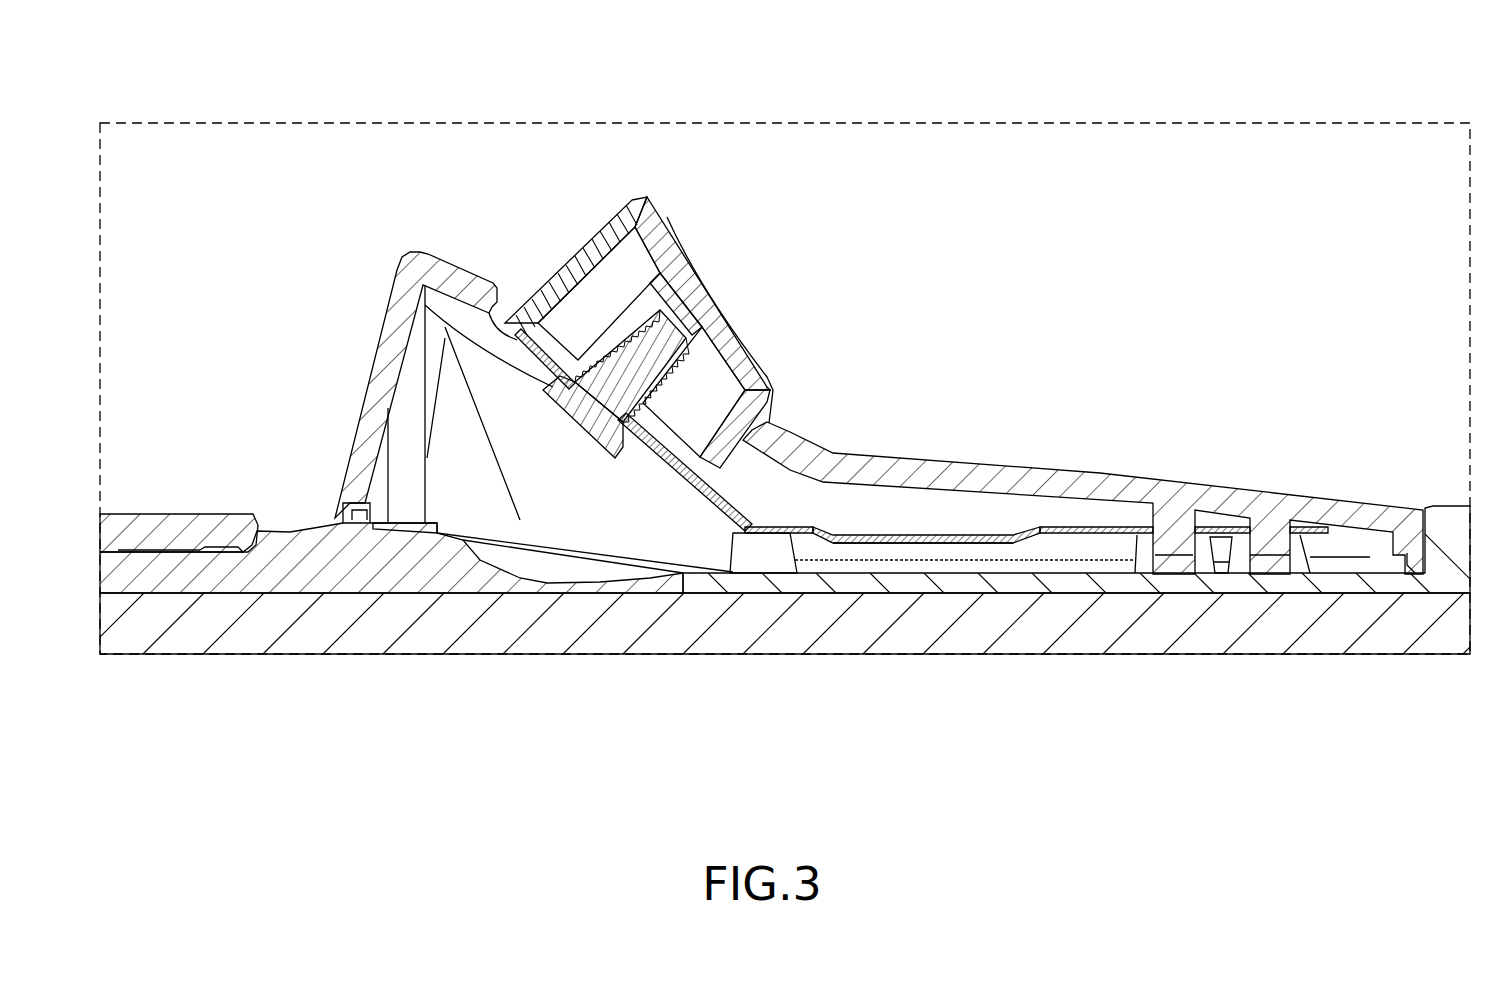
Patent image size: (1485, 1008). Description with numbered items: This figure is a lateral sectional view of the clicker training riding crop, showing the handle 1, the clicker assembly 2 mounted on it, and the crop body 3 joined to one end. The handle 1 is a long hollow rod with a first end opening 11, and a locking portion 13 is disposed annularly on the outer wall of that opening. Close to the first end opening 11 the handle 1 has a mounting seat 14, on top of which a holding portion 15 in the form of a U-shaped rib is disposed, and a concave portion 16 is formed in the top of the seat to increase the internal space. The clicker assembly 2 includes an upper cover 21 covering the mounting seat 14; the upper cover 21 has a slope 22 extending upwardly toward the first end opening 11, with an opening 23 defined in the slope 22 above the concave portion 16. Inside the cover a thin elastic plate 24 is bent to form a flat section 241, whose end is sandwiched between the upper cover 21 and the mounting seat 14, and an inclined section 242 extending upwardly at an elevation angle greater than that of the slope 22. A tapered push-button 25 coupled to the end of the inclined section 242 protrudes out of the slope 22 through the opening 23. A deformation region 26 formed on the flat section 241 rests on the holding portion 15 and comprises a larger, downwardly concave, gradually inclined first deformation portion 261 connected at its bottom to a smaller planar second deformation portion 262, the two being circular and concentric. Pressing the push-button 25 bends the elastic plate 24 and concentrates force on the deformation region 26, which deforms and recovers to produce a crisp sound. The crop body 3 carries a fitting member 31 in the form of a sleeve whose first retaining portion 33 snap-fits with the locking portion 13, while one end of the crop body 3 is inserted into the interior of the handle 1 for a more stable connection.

The handle 1 is at (1449, 495).
The clicker assembly 2 is at (879, 379).
The crop body 3 is at (283, 598).
The first end opening 11 is at (162, 578).
The locking portion 13 is at (235, 548).
The mounting seat 14 is at (855, 562).
The holding portion 15 is at (1040, 555).
The concave portion 16 is at (551, 582).
The upper cover 21 is at (915, 470).
The slope 22 is at (457, 272).
The opening 23 is at (537, 275).
The elastic plate 24 is at (800, 527).
The push-button 25 is at (673, 233).
The deformation region 26 is at (940, 535).
The fitting member 31 is at (138, 520).
The first retaining portion 33 is at (248, 555).
The flat section 241 is at (1090, 527).
The inclined section 242 is at (652, 452).
The first deformation portion 261 is at (808, 580).
The second deformation portion 262 is at (950, 545).